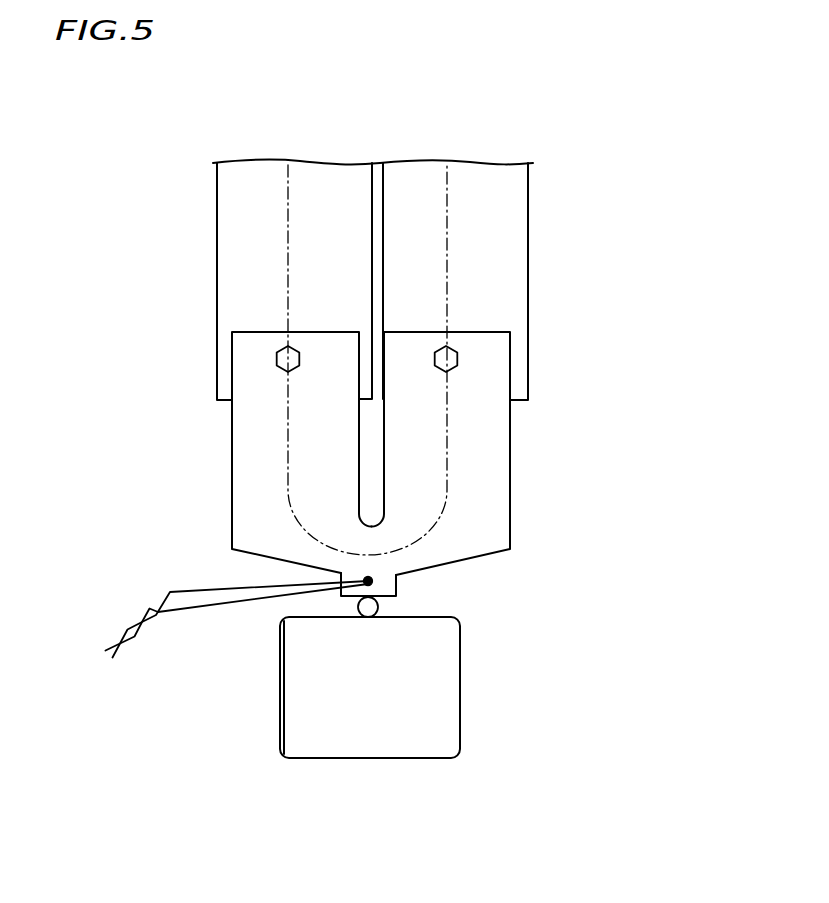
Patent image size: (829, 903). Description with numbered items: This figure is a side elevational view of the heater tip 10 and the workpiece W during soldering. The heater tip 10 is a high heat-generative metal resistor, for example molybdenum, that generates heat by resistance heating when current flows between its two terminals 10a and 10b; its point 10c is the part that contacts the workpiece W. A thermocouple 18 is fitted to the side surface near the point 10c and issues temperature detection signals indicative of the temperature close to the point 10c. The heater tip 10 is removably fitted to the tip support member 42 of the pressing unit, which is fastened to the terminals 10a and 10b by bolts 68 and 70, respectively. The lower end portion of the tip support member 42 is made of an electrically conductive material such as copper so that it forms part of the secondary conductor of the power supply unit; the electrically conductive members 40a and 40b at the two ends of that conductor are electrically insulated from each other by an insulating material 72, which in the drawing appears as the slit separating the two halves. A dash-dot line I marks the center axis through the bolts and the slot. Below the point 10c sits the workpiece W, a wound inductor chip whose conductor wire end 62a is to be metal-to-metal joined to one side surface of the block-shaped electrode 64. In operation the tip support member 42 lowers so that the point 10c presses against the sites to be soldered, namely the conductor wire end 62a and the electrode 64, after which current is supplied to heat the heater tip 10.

The heater tip 10 is at (371, 464).
The terminal 10a is at (477, 369).
The terminal 10b is at (248, 372).
The point 10c is at (388, 585).
The thermocouple 18 is at (272, 582).
The electrically conductive member 40a is at (512, 239).
The electrically conductive member 40b is at (224, 248).
The tip support member 42 is at (536, 197).
The conductor wire end 62a is at (380, 607).
The electrode 64 is at (445, 707).
The bolt 68 is at (457, 350).
The bolt 70 is at (278, 350).
The insulating material 72 is at (373, 190).
The center axis I is at (450, 282).
The workpiece W is at (268, 734).